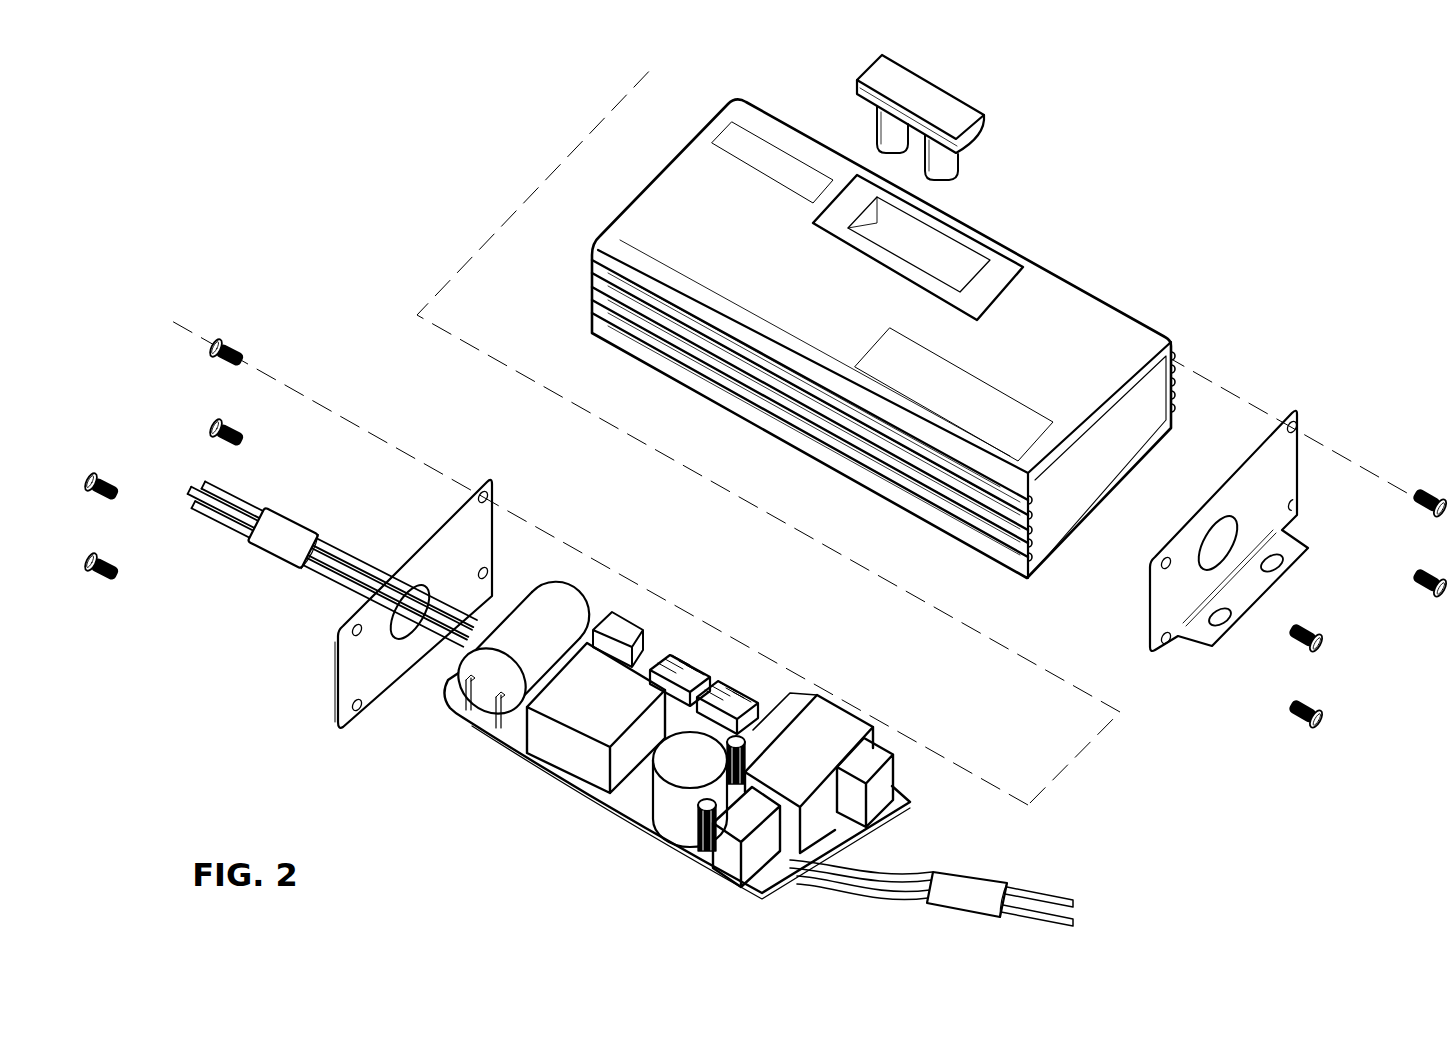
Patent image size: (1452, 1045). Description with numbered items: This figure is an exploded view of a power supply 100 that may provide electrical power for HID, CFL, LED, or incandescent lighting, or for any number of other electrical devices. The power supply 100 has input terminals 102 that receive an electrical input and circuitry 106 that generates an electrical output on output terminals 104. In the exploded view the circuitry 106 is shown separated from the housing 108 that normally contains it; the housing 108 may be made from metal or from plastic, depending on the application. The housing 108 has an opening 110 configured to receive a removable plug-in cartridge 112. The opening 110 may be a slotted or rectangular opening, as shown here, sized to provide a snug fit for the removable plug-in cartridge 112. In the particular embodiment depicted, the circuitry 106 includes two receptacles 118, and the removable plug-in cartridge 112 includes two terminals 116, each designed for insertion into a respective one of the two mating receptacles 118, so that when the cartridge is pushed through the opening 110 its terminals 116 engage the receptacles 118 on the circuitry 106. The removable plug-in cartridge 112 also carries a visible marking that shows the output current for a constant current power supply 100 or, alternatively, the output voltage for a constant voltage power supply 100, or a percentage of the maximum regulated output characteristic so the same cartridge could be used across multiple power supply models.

The power supply 100 is at (1193, 159).
The input terminals 102 is at (270, 577).
The output terminals 104 is at (1044, 879).
The circuitry 106 is at (528, 786).
The housing 108 is at (1085, 325).
The opening 110 is at (960, 270).
The removable plug-in cartridge 112 is at (982, 118).
The terminals 116 is at (888, 136).
The receptacles 118 is at (670, 663).